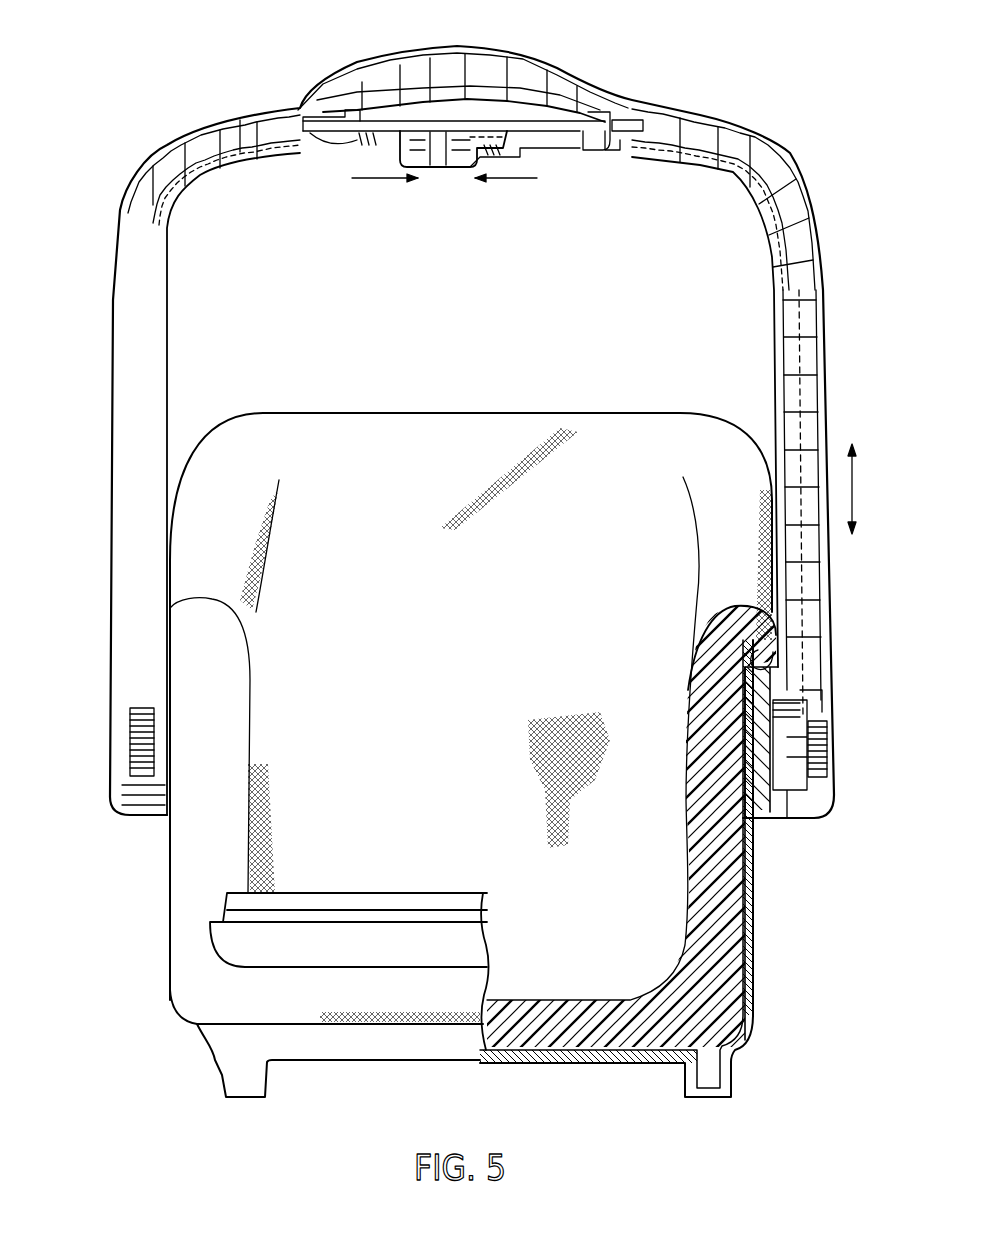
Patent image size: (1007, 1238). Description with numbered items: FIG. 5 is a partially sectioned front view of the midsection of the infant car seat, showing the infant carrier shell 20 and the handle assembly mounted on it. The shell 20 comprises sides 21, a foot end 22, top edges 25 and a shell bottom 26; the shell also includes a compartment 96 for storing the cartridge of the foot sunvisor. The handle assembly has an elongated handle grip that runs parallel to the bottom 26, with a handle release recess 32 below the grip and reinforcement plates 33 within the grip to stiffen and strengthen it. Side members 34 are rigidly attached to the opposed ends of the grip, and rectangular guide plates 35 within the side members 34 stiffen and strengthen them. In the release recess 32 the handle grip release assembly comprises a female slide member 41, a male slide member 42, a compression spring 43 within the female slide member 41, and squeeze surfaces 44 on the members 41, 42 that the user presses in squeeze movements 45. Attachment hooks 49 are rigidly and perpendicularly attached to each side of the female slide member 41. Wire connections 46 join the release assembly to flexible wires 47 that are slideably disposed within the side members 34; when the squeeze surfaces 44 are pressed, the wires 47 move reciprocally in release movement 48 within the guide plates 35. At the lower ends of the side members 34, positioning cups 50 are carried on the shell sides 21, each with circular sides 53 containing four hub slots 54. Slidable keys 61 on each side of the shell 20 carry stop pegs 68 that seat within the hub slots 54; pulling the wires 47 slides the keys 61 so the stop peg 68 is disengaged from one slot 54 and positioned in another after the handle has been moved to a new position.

The infant carrier shell 20 is at (784, 961).
The sides 21 is at (753, 960).
The foot end 22 is at (188, 996).
The top edges 25 is at (770, 665).
The shell bottom 26 is at (398, 1060).
The handle release recess 32 is at (417, 127).
The reinforcement plates 33 is at (526, 78).
The side members 34 is at (115, 366).
The rectangular guide plates 35 is at (818, 237).
The female slide member 41 is at (443, 168).
The male slide member 42 is at (583, 142).
The compression spring 43 is at (461, 138).
The squeeze surfaces 44 is at (400, 156).
The squeeze movements 45 is at (388, 182).
The wire connections 46 is at (306, 110).
The flexible wires 47 is at (252, 127).
The release movement 48 is at (853, 482).
The attachment hooks 49 is at (433, 168).
The positioning cups 50 is at (124, 820).
The circular sides 53 is at (760, 735).
The hub slots 54 is at (812, 716).
The slidable keys 61 is at (130, 722).
The stop pegs 68 is at (794, 820).
The compartment 96 is at (492, 960).